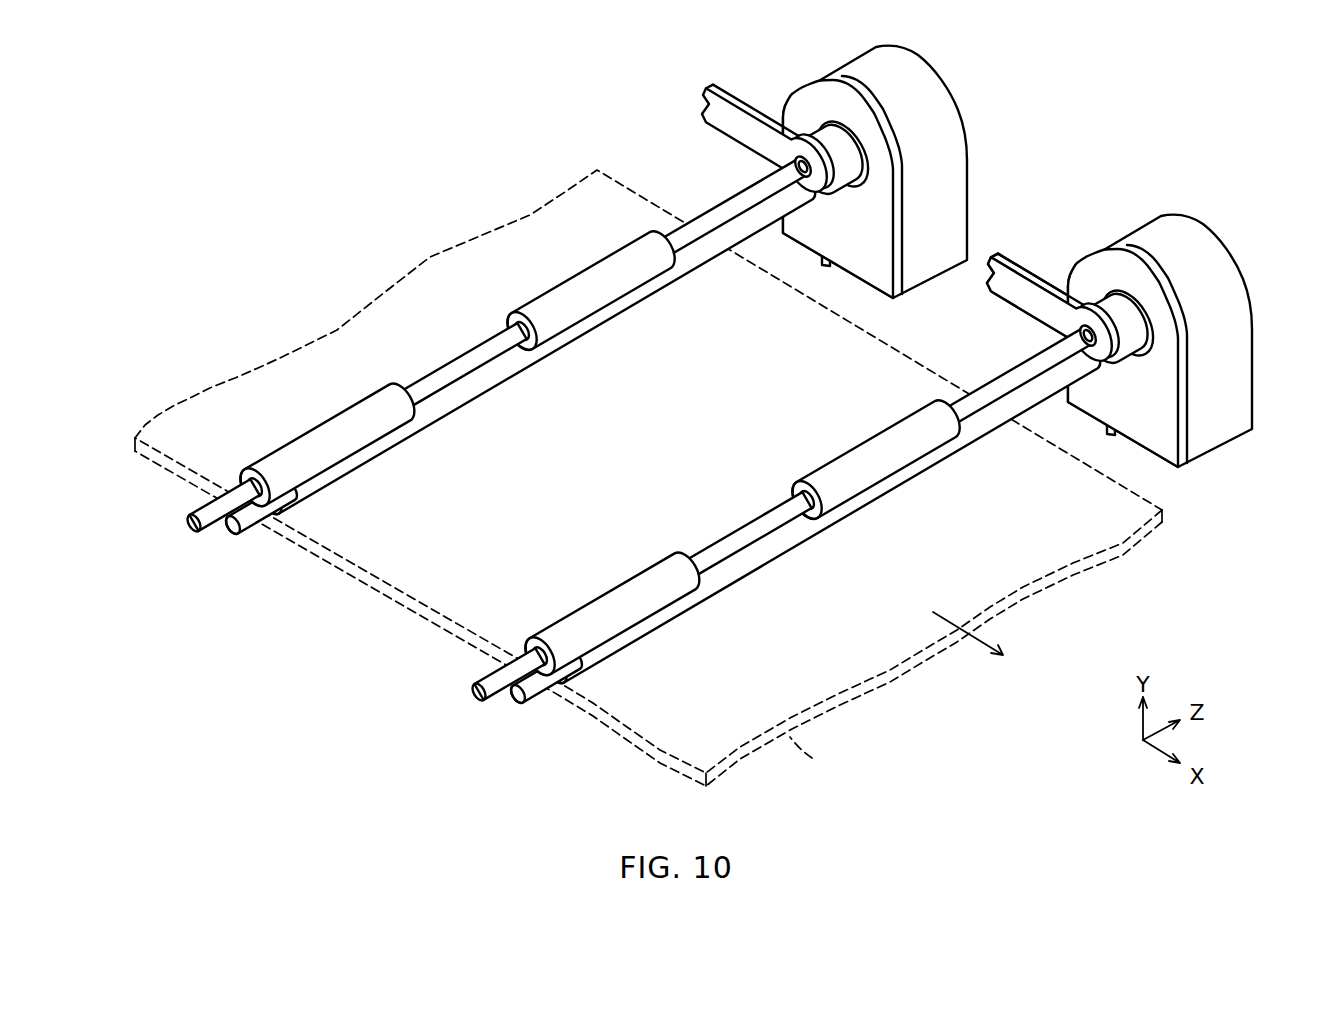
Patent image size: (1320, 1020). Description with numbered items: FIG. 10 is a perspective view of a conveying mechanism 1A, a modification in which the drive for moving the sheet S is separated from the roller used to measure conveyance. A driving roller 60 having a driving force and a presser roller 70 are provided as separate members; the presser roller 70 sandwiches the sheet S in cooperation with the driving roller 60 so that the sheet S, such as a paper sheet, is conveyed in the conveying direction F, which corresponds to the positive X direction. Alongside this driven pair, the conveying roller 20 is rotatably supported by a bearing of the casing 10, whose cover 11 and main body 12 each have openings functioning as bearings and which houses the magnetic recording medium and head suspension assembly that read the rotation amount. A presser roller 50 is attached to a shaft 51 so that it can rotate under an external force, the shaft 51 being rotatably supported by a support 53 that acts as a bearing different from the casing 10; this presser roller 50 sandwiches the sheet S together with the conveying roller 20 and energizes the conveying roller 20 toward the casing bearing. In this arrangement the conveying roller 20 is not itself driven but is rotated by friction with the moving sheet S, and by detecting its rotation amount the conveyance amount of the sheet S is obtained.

The conveying mechanism 1A is at (390, 143).
The casing 10 is at (892, 208).
The cover 11 is at (878, 285).
The main body 12 is at (920, 262).
The conveying roller 20 is at (465, 392).
The presser roller 50 is at (578, 285).
The shaft 51 is at (458, 364).
The support 53 is at (745, 123).
The driving roller 60 is at (748, 551).
The presser roller 70 is at (873, 455).
The sheet S is at (648, 478).
The conveying direction F is at (970, 645).